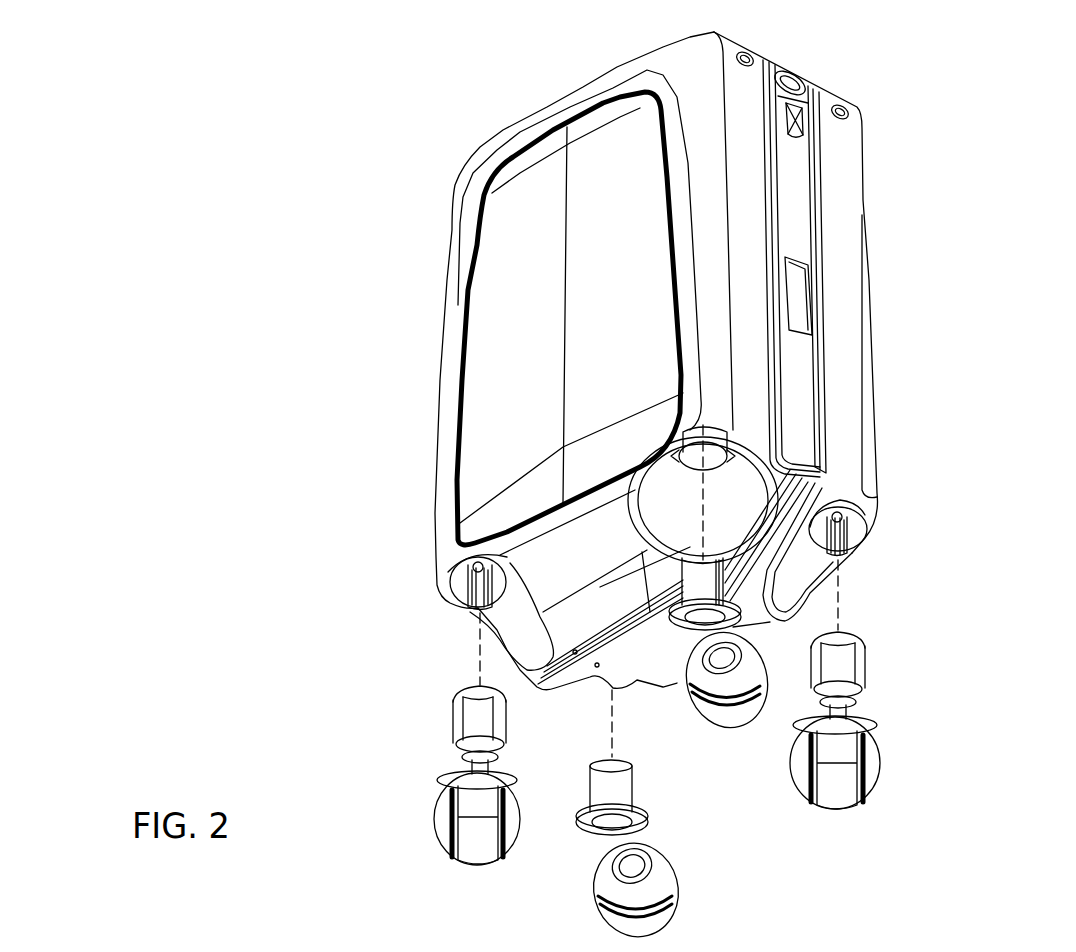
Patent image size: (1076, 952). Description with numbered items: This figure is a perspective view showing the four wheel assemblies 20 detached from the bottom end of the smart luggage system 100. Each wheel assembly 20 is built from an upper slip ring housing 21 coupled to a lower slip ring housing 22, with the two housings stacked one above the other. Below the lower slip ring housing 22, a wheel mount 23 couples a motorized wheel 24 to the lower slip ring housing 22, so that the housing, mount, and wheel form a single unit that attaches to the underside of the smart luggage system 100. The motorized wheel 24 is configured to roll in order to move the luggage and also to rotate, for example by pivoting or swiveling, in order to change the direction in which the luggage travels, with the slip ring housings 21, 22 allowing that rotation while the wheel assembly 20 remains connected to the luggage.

The smart luggage system 100 is at (963, 78).
The wheel assembly 20 is at (887, 755).
The upper slip ring housing 21 is at (862, 643).
The lower slip ring housing 22 is at (862, 668).
The wheel mount 23 is at (648, 855).
The motorized wheel 24 is at (840, 797).